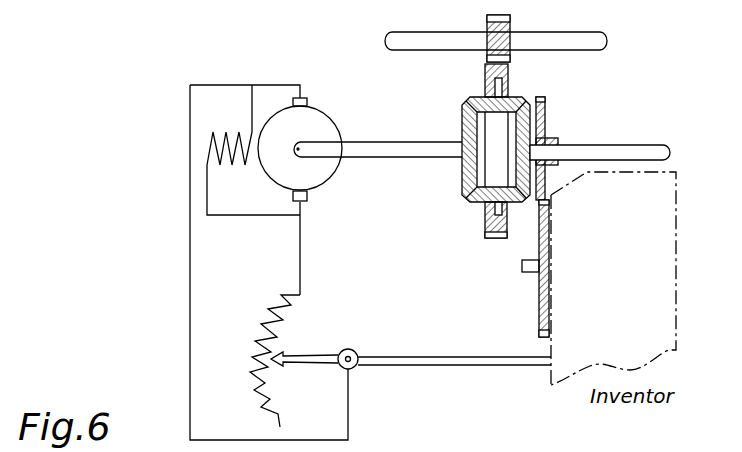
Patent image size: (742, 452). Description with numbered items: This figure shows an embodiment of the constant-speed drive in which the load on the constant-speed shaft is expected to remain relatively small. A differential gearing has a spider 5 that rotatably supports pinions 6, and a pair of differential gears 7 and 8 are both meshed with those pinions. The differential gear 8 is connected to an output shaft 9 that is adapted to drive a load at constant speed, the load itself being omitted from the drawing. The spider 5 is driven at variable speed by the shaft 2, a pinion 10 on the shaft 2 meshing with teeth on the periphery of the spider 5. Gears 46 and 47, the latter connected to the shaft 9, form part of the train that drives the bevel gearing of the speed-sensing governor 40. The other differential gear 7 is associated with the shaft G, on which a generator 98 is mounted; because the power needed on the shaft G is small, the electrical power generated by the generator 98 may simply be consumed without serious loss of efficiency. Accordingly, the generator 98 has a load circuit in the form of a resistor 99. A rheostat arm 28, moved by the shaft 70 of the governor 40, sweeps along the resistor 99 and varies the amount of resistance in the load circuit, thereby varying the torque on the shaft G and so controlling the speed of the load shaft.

The shaft 2 is at (442, 36).
The pinion 10 is at (508, 25).
The spider 5 is at (509, 85).
The pinions 6 is at (480, 97).
The differential gear 7 is at (462, 113).
The differential gear 8 is at (537, 100).
The gear 47 is at (547, 128).
The shaft G is at (402, 152).
The output shaft 9 is at (613, 146).
The generator 98 is at (333, 119).
The resistor 99 is at (258, 326).
The rheostat arm 28 is at (310, 358).
The shaft 70 is at (396, 357).
The gear 46 is at (538, 290).
The governor 40 is at (549, 373).